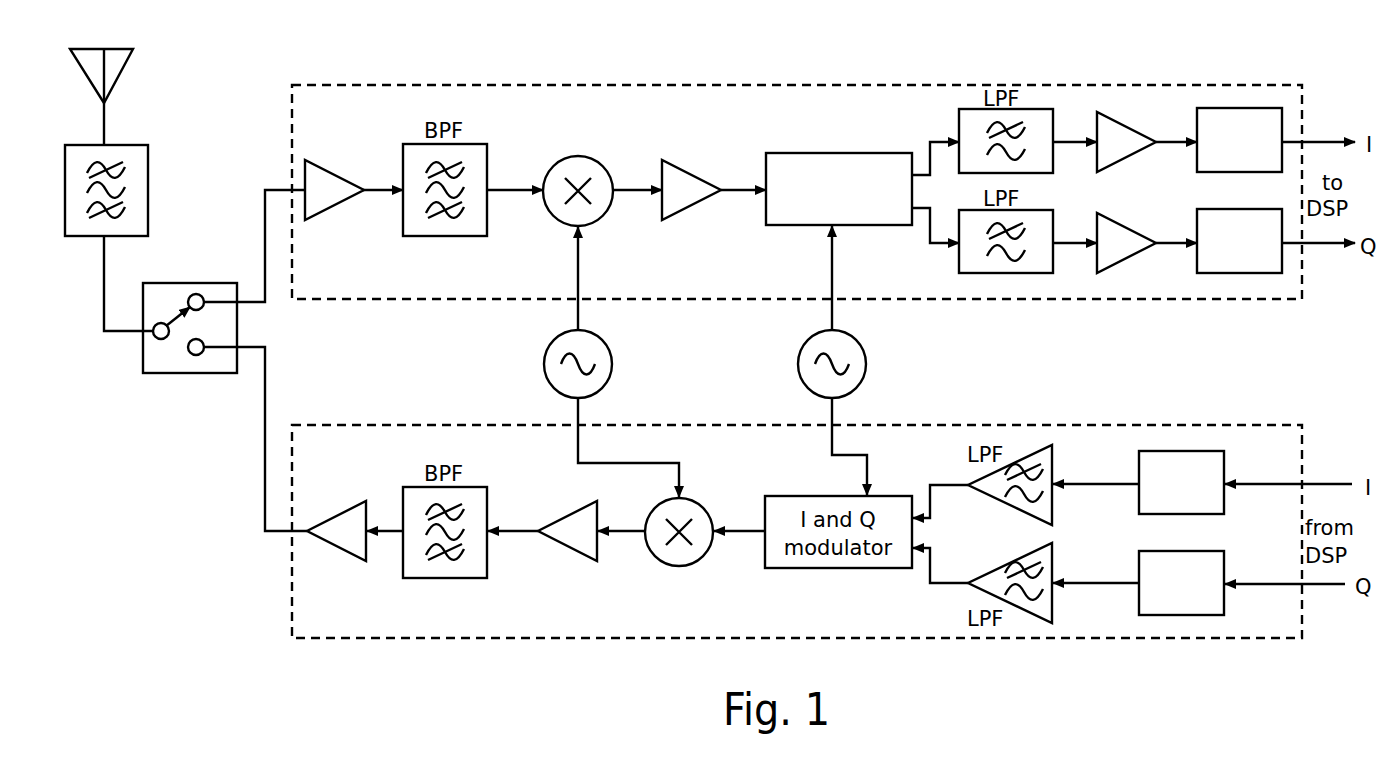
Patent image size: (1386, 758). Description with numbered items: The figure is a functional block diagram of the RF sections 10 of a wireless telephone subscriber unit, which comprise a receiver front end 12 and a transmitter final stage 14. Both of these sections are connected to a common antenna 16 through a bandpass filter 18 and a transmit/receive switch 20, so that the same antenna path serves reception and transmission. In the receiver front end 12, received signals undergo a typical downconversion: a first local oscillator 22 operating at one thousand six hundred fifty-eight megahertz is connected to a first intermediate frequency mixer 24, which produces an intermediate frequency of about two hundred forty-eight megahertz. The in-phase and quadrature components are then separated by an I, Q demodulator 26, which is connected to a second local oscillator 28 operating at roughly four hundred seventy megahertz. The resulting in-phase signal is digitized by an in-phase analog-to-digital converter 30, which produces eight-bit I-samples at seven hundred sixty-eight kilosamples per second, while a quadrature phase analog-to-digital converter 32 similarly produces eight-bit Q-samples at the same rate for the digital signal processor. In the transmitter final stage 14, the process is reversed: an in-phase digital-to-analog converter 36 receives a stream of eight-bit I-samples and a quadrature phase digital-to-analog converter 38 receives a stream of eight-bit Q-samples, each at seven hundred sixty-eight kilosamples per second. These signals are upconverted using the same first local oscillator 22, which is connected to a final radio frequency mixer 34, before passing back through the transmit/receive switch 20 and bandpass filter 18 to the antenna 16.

The RF sections 10 is at (786, 58).
The receiver front end 12 is at (377, 85).
The transmitter final stage 14 is at (291, 603).
The antenna 16 is at (120, 48).
The bandpass filter 18 is at (149, 165).
The transmit/receive (T/R) switch 20 is at (160, 374).
The first local oscillator 22 is at (544, 358).
The first intermediate frequency (IF) mixer 24 is at (558, 222).
The I, Q demodulator 26 is at (781, 226).
The second local oscillator 28 is at (866, 345).
The in-phase analog-to-digital converter (I-ADC) 30 is at (1252, 108).
The quadrature phase analog-to-digital converter (Q-ADC) 32 is at (1262, 273).
The final radio frequency (RF) mixer 34 is at (708, 508).
The in-phase digital-to-analog converter (I-DAC) 36 is at (1195, 451).
The quadrature phase digital-to-analog converter (Q-DAC) 38 is at (1195, 615).